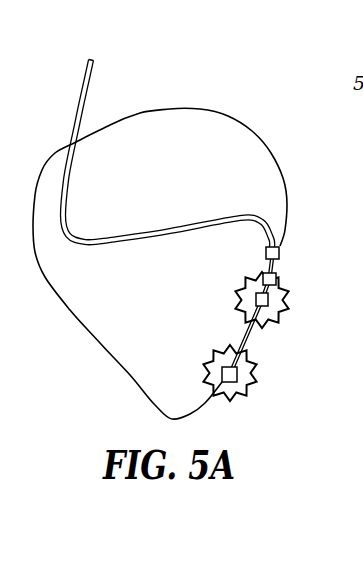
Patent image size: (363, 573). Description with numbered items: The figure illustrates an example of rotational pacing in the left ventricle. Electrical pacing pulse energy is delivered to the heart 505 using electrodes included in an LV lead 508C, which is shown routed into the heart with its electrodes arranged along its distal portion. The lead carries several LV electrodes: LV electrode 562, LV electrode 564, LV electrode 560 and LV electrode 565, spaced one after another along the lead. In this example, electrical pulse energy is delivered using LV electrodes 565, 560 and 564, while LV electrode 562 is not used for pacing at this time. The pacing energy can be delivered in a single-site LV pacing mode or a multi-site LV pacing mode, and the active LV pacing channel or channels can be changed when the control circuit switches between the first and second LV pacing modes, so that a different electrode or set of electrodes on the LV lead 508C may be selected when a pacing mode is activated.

The heart 505 is at (222, 116).
The LV lead 508C is at (80, 83).
The LV electrode 560 is at (269, 298).
The LV electrode 562 is at (281, 253).
The LV electrode 564 is at (278, 278).
The LV electrode 565 is at (239, 373).